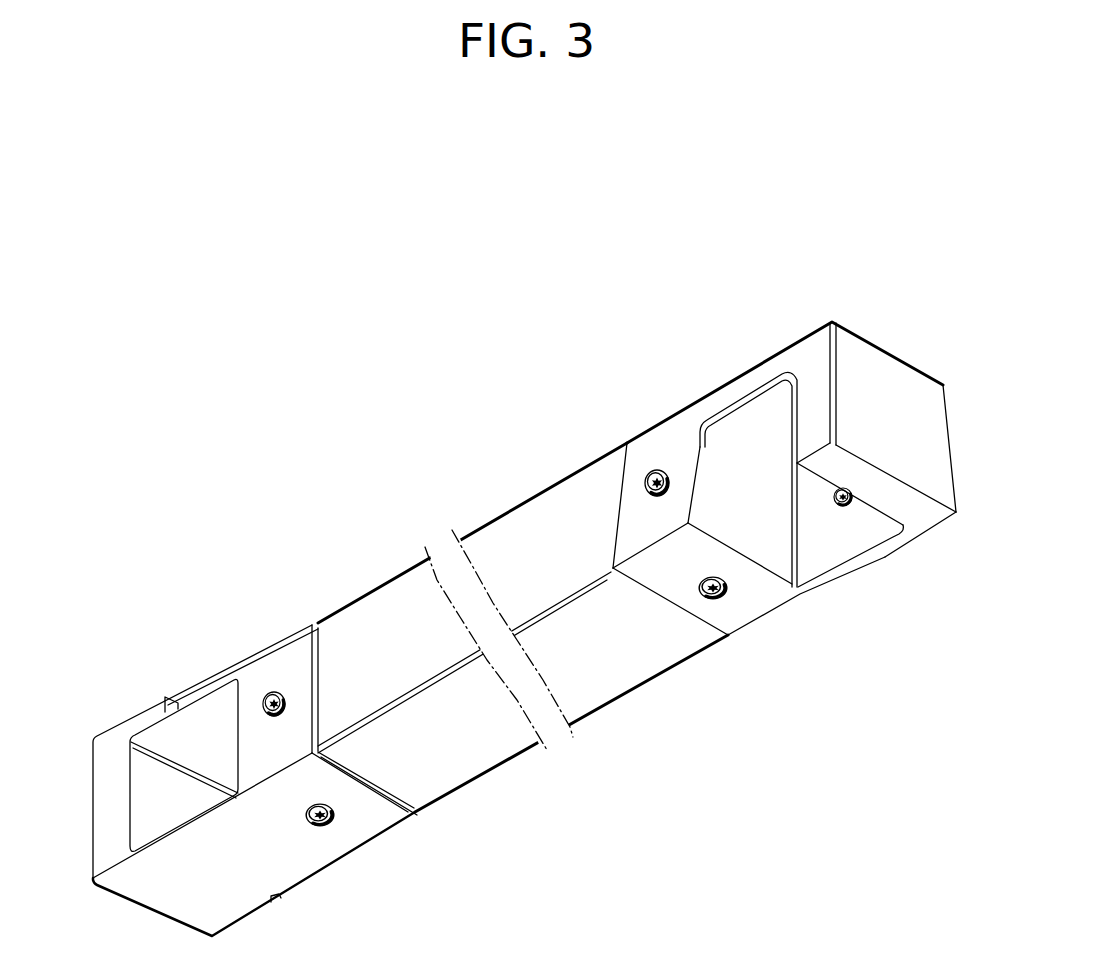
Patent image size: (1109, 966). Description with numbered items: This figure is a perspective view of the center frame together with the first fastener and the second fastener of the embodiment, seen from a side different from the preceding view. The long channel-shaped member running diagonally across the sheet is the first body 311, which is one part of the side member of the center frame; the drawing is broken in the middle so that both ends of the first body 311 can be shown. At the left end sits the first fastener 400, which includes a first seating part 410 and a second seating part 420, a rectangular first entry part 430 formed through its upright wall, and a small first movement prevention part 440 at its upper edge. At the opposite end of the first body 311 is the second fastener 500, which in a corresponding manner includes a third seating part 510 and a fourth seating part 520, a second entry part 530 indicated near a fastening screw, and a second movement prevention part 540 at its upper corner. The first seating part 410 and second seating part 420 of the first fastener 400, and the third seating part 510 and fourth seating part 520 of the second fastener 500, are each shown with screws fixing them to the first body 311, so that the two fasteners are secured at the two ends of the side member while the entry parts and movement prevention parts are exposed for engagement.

The first body 311 is at (535, 548).
The first fastener 400 is at (255, 728).
The first seating part 410 is at (205, 751).
The second seating part 420 is at (288, 660).
The first entry part 430 is at (195, 745).
The first movement prevention part 440 is at (140, 653).
The second fastener 500 is at (784, 529).
The third seating part 510 is at (747, 382).
The fourth seating part 520 is at (655, 517).
The second entry part 530 is at (830, 503).
The second movement prevention part 540 is at (813, 328).